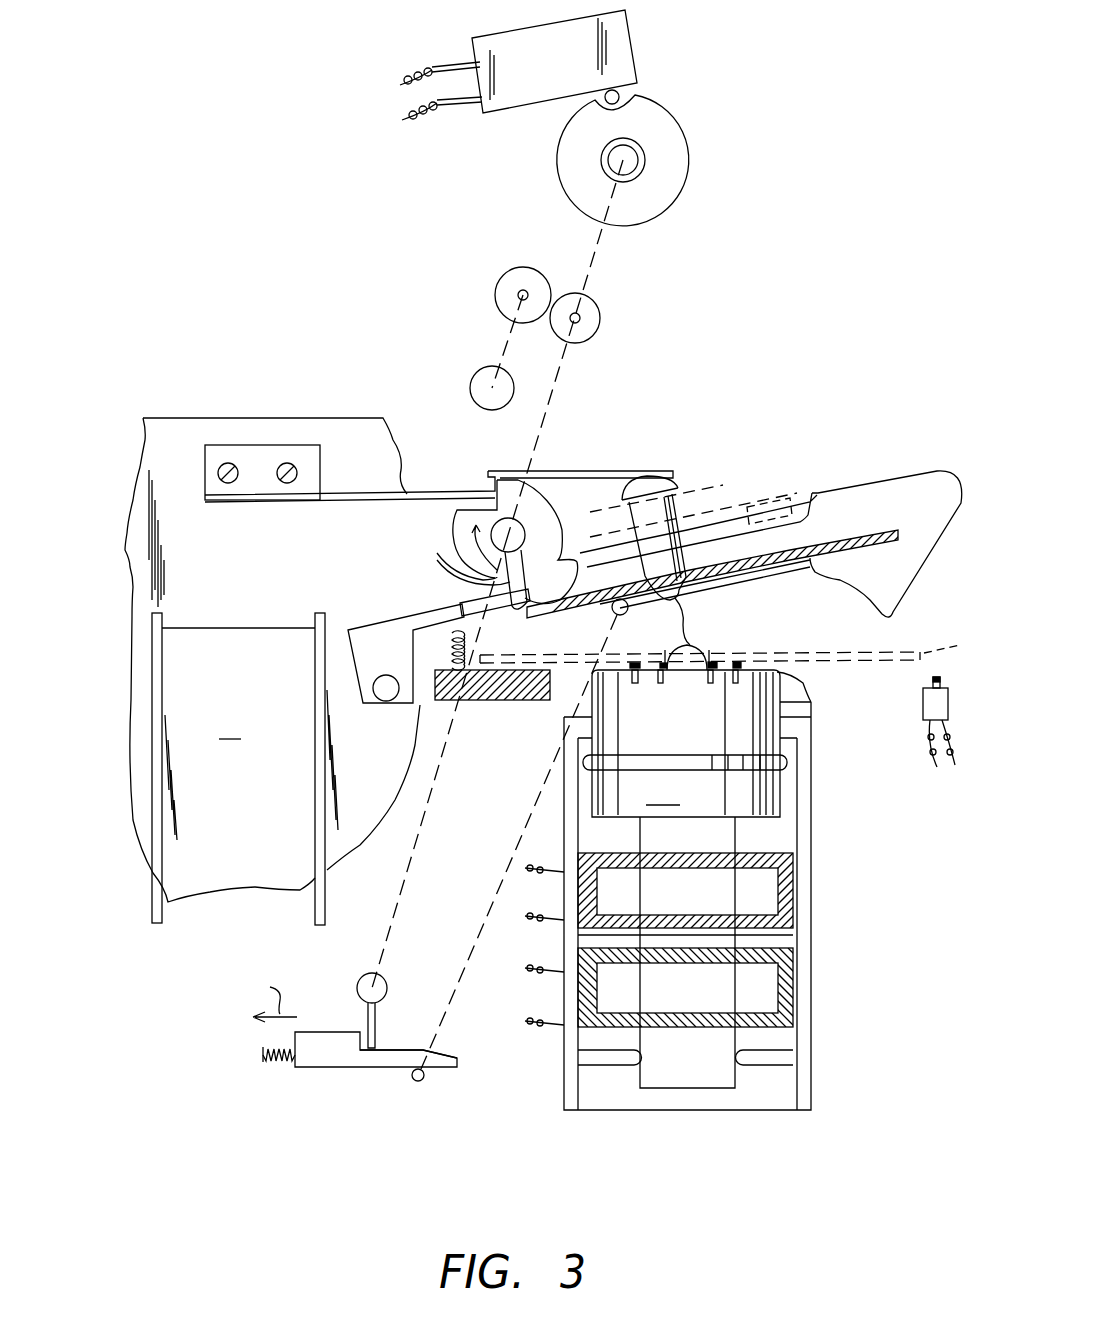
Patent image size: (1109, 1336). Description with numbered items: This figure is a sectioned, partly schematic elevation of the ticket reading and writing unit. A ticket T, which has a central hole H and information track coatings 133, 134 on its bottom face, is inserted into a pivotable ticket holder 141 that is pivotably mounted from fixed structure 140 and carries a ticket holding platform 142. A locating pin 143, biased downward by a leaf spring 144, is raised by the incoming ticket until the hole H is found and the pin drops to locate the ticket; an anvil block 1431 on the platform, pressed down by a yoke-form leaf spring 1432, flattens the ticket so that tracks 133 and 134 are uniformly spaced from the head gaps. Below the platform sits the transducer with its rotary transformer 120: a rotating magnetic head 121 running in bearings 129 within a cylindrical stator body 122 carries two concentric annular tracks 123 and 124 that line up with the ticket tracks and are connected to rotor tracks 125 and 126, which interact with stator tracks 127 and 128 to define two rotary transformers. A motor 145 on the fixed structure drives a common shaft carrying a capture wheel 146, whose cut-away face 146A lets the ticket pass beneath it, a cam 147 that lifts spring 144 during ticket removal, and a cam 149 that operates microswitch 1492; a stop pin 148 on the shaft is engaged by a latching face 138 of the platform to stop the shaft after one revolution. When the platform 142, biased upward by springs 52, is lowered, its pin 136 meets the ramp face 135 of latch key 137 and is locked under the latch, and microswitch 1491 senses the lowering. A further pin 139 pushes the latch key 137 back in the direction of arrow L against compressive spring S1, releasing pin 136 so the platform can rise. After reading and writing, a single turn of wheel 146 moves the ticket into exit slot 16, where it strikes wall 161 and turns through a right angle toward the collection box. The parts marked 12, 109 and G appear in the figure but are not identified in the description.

The microswitch 1492 is at (620, 92).
The cam 149 is at (670, 162).
The gear train G is at (569, 294).
The motor 145 is at (486, 367).
The fixed structure 140 is at (156, 430).
The wall 161 is at (163, 692).
The exit slot 16 is at (230, 727).
The pivotable ticket holder 141 is at (358, 637).
The latching face 138 is at (455, 608).
The springs 52 is at (443, 703).
The cam 147 is at (537, 503).
The capture wheel 146 is at (567, 553).
The face 146A is at (514, 615).
The stop pin 148 is at (446, 568).
The leaf spring 144 is at (630, 471).
The locating pin 143 is at (650, 517).
The yoke-form leaf spring 1432 is at (737, 542).
The anvil block 1431 is at (790, 505).
The ticket holding platform 142 is at (597, 610).
The carriage body 12 is at (828, 640).
The ticket T is at (898, 533).
The pin 136 is at (623, 615).
The central hole H is at (687, 633).
The information track coating 133 is at (717, 661).
The information track coating 134 is at (741, 662).
The ledge 109 is at (798, 692).
The microswitch 1491 is at (945, 703).
The cylindrical stator body 122 is at (812, 792).
The transducer with associated rotary transformer 120 is at (870, 854).
The rotating magnetic head 121 is at (686, 740).
The annular track 123 is at (710, 684).
The annular track 124 is at (735, 684).
The bearings 129 is at (661, 756).
The annular track 127 is at (790, 885).
The annular track 125 is at (699, 913).
The annular track 128 is at (790, 1000).
The annular track 126 is at (700, 1010).
The pin 139 is at (367, 1010).
The latch key 137 is at (328, 1060).
The ramp face 135 is at (415, 1050).
The compressive spring S1 is at (272, 1062).
The arrow L is at (275, 999).